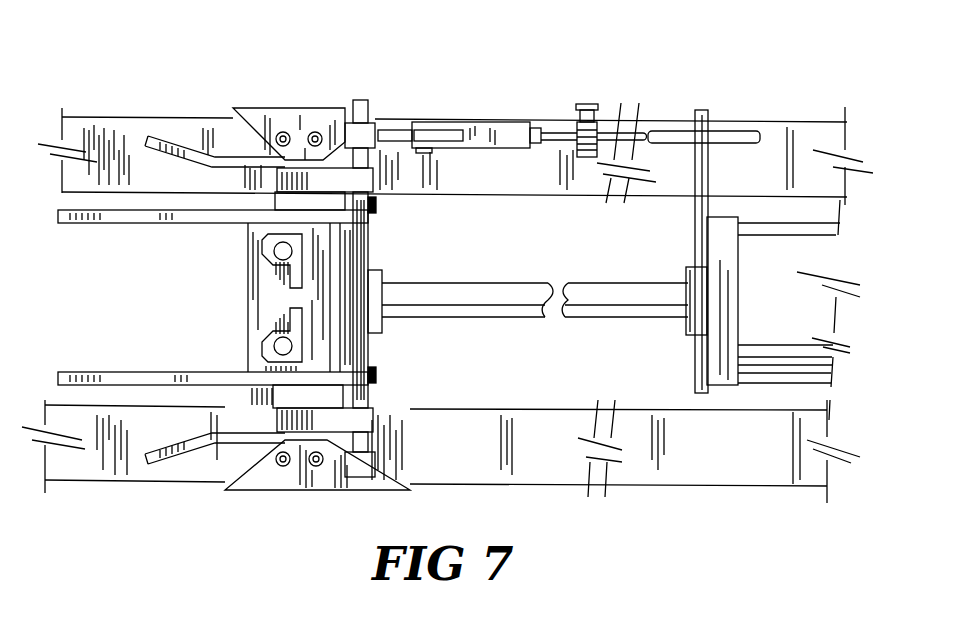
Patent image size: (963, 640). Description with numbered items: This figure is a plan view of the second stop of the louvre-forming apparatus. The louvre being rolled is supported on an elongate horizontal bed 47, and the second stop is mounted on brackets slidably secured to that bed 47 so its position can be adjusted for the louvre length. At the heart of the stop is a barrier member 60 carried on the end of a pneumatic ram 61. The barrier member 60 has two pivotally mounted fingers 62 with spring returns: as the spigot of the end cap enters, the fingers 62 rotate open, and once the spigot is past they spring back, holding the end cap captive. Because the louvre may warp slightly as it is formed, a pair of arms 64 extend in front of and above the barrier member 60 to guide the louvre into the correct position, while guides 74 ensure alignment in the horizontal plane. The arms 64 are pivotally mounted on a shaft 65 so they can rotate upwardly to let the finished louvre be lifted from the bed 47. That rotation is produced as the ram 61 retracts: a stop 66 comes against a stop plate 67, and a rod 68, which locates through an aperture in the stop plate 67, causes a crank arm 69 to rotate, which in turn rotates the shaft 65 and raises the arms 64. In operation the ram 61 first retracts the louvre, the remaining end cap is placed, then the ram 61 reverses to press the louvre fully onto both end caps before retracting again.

The bed 47 is at (132, 116).
The guides 74 is at (185, 153).
The shaft 65 is at (362, 103).
The arms 64 is at (127, 223).
The barrier member 60 is at (246, 262).
The fingers 62 is at (273, 328).
The crank arm 69 is at (402, 134).
The stop 66 is at (592, 106).
The rod 68 is at (730, 132).
The stop plate 67 is at (706, 177).
The pneumatic ram 61 is at (827, 323).